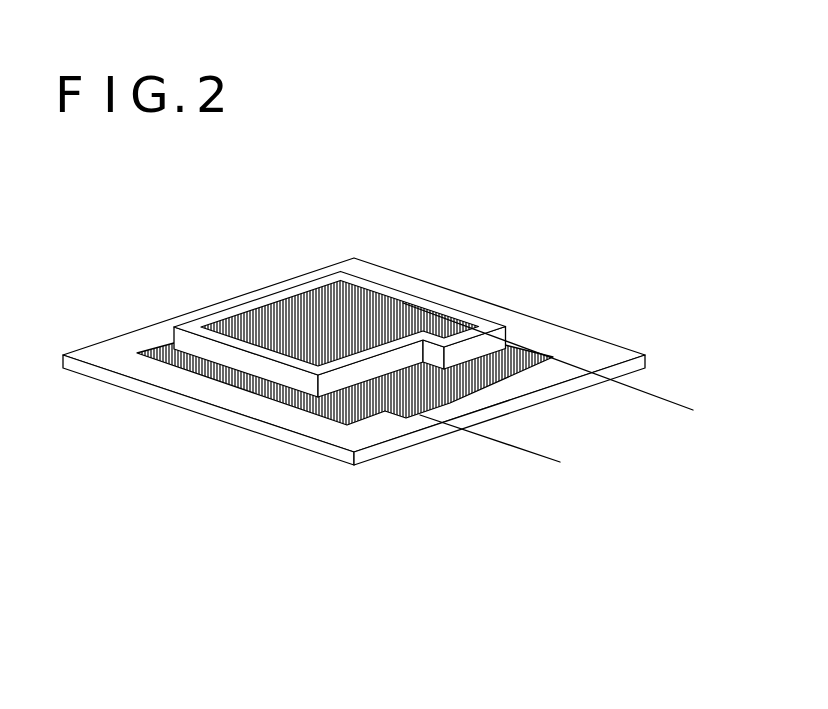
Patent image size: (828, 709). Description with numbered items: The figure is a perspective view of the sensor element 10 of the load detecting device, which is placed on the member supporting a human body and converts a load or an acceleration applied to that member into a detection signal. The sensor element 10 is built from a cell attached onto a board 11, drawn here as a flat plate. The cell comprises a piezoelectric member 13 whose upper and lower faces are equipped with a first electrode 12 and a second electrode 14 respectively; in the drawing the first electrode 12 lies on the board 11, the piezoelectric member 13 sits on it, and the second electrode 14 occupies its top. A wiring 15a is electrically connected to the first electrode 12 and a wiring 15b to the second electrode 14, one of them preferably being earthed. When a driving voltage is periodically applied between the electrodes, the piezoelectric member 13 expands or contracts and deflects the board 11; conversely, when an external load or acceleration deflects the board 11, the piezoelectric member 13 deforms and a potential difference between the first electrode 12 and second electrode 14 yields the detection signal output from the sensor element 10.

The sensor element 10 is at (585, 203).
The board 11 is at (205, 402).
The first electrode 12 is at (175, 367).
The piezoelectric member 13 is at (170, 329).
The second electrode 14 is at (400, 300).
The wiring 15a is at (503, 443).
The wiring 15b is at (652, 395).